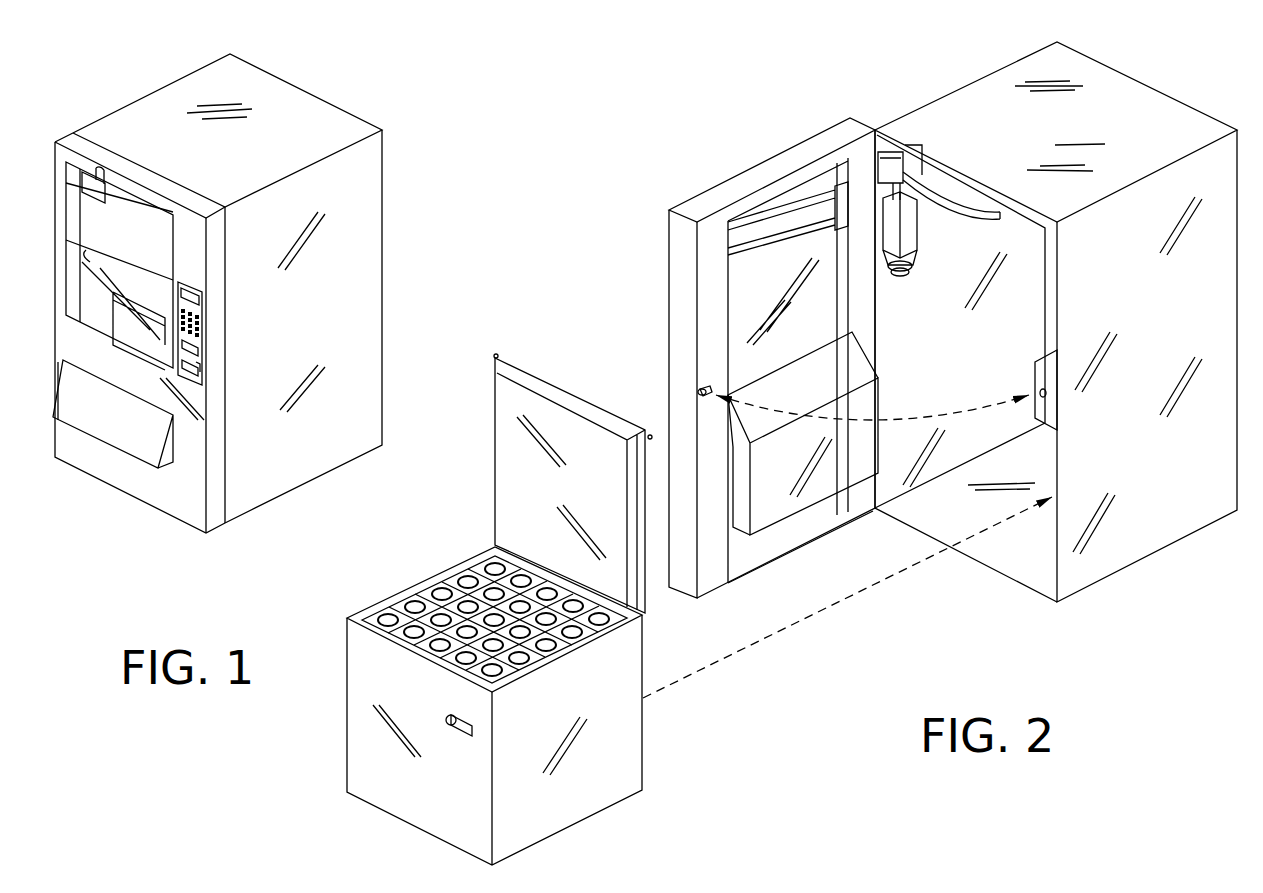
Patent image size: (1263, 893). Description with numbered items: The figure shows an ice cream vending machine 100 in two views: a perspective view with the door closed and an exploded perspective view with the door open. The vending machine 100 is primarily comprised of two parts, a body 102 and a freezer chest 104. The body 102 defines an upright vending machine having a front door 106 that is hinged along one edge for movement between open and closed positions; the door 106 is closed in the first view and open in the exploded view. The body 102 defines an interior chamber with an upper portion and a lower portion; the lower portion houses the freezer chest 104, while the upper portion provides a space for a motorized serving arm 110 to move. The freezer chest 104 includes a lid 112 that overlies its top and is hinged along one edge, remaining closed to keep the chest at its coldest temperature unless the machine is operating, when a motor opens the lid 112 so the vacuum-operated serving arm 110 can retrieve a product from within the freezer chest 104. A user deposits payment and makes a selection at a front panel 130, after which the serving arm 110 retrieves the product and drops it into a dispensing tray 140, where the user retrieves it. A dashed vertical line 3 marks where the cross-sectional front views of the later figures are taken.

In FIG. 1, the vending machine 100 is at (348, 100).
In FIG. 2, the vending machine 100 is at (1061, 322).
In FIG. 2, the body 102 is at (1205, 58).
In FIG. 2, the freezer chest 104 is at (642, 735).
In FIG. 2, the front door 106 is at (738, 187).
In FIG. 2, the motorized serving arm 110 is at (912, 278).
In FIG. 2, the lid 112 is at (548, 374).
In FIG. 1, the front panel 130 is at (194, 343).
In FIG. 1, the dispensing tray 140 is at (105, 435).
In FIG. 1, the section line 3- 3 is at (190, 55).